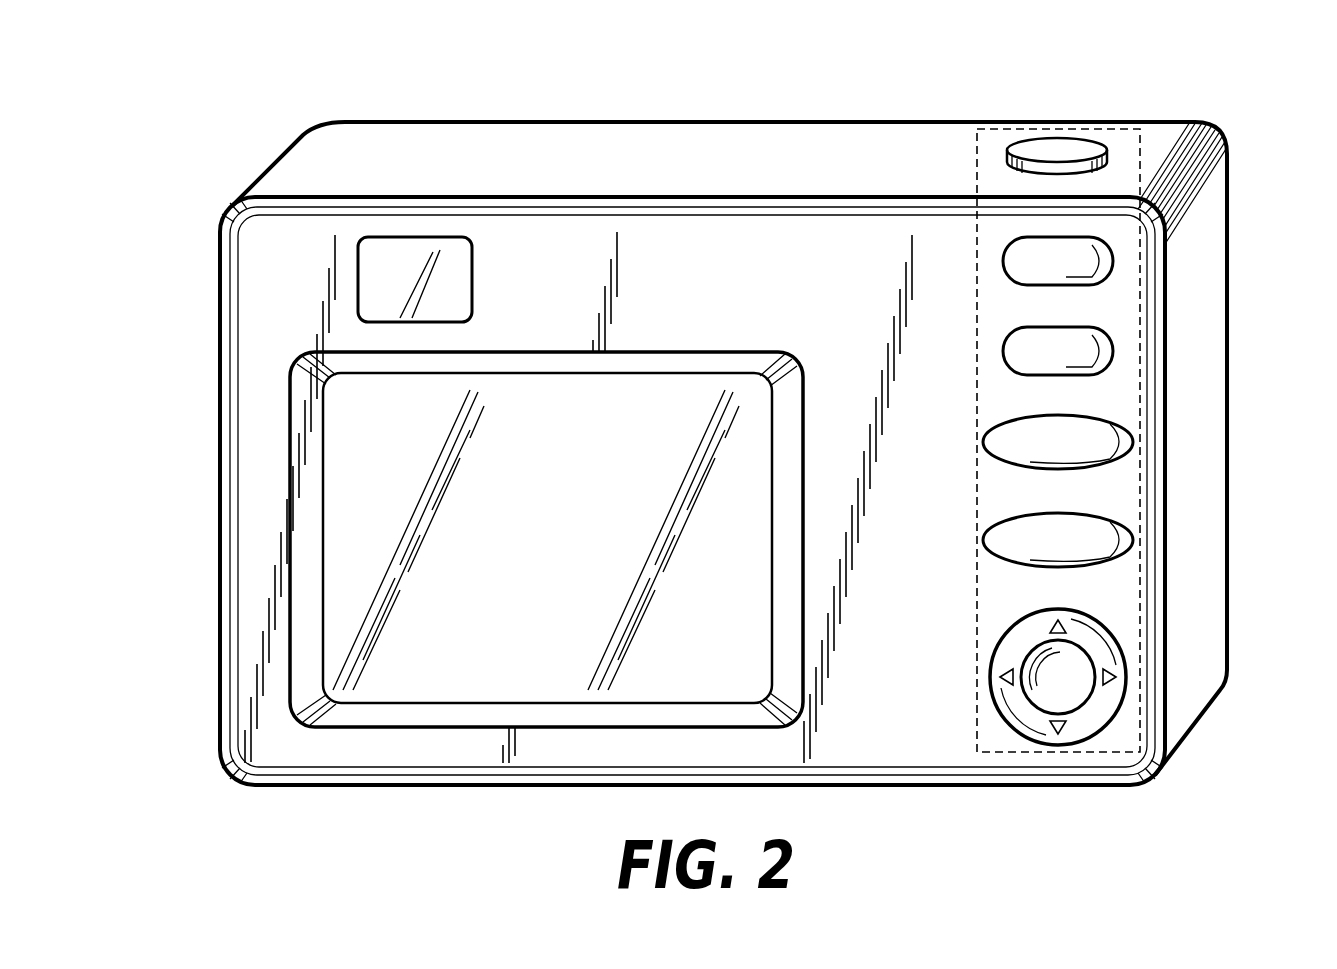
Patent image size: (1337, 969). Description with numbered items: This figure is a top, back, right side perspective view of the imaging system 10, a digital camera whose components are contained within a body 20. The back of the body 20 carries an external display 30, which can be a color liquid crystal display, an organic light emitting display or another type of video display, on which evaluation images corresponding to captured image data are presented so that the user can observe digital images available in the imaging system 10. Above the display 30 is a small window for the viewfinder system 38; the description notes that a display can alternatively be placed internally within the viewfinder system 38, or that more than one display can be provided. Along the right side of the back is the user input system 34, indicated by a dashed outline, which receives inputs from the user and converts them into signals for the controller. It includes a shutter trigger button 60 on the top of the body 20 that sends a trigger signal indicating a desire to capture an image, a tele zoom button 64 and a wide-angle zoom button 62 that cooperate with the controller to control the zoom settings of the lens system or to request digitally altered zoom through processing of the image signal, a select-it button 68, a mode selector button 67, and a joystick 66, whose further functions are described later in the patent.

The imaging system 10 is at (677, 99).
The body 20 is at (220, 539).
The display 30 is at (362, 444).
The user input system 34 is at (1012, 128).
The viewfinder system 38 is at (392, 266).
The shutter trigger button 60 is at (1056, 140).
The wide-angle zoom button 62 is at (1107, 348).
The tele zoom button 64 is at (1107, 252).
The joystick 66 is at (1117, 428).
The mode selector button 67 is at (1117, 527).
The select-it button 68 is at (1118, 640).